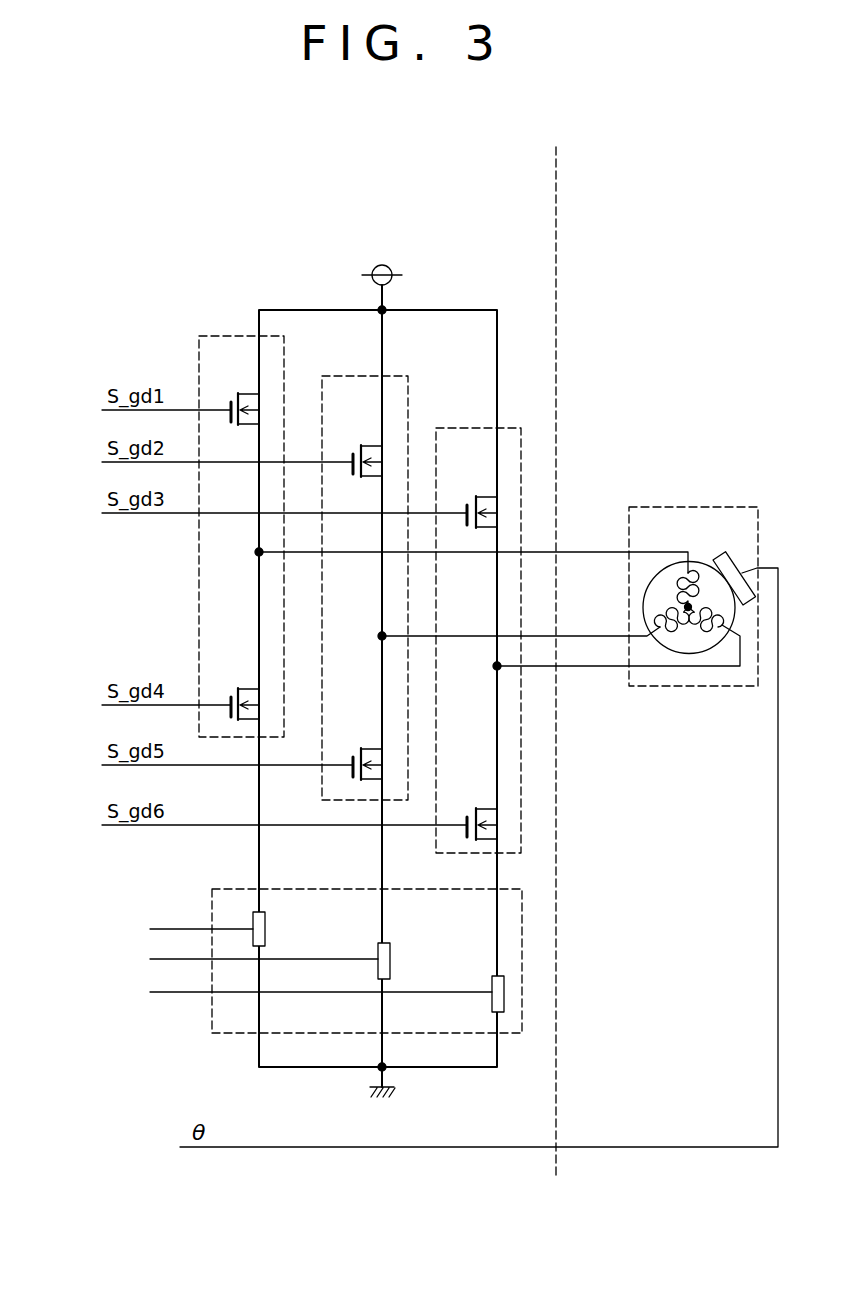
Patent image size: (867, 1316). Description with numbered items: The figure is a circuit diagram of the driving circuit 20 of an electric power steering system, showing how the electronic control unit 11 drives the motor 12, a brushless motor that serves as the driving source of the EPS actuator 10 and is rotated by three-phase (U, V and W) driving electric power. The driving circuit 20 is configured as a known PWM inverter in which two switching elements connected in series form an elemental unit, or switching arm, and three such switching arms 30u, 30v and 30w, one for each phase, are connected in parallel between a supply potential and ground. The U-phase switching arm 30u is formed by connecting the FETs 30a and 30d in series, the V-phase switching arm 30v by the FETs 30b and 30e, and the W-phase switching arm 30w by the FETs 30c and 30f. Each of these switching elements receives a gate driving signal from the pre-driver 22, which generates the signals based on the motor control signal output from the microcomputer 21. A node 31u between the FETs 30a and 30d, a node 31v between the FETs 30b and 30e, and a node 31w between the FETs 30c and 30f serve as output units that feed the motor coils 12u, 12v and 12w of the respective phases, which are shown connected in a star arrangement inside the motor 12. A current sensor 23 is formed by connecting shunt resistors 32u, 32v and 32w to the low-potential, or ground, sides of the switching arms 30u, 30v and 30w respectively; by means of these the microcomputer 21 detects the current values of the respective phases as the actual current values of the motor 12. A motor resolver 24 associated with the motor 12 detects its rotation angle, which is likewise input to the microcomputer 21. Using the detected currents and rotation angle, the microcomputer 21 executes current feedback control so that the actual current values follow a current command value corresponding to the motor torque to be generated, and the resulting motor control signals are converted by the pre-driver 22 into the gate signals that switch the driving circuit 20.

The EPS actuator 10 is at (690, 507).
The electronic control unit 11 is at (558, 177).
The motor 12 is at (689, 561).
The U-phase motor coil 12u is at (680, 582).
The V-phase motor coil 12v is at (673, 630).
The W-phase motor coil 12w is at (713, 630).
The driving circuit 20 is at (206, 210).
The microcomputer 21 is at (68, 961).
The pre-driver 22 is at (56, 609).
The current sensor 23 is at (232, 889).
The motor resolver 24 is at (737, 557).
The U-phase switching arm 30u is at (233, 336).
The V-phase switching arm 30v is at (358, 376).
The W-phase switching arm 30w is at (472, 428).
The FET 30a is at (240, 392).
The FET 30b is at (362, 444).
The FET 30c is at (477, 495).
The FET 30d is at (240, 689).
The FET 30e is at (362, 748).
The FET 30f is at (477, 807).
The node 31u is at (257, 555).
The node 31v is at (380, 639).
The node 31w is at (495, 669).
The shunt resistor 32u is at (266, 928).
The shunt resistor 32v is at (391, 950).
The shunt resistor 32w is at (492, 984).